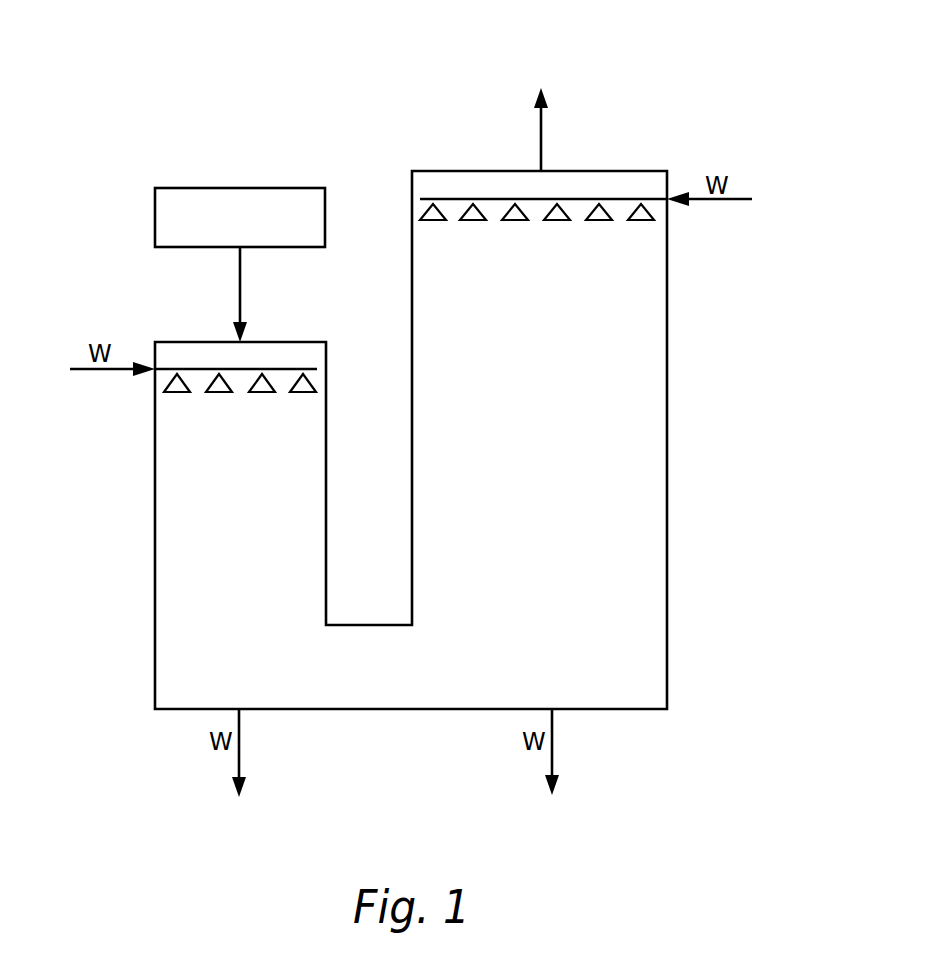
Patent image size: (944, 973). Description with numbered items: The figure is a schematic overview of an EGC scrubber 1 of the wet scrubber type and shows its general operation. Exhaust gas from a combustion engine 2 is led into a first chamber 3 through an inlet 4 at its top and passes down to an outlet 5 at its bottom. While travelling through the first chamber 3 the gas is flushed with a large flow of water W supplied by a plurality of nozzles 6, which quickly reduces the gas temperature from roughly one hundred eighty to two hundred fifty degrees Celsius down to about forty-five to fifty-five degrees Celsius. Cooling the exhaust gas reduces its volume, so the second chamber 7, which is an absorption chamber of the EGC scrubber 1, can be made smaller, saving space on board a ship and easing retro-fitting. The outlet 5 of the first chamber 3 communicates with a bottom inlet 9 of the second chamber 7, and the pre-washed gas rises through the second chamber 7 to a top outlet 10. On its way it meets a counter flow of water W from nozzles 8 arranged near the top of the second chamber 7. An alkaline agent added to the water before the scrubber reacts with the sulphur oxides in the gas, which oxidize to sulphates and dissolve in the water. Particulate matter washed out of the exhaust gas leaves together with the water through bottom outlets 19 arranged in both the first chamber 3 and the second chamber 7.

The EGC scrubber 1 is at (678, 105).
The combustion engine 2 is at (155, 207).
The first chamber 3 is at (220, 483).
The inlet 4 is at (236, 340).
The outlet 5 is at (323, 667).
The nozzles 6 is at (260, 383).
The second chamber 7 is at (560, 403).
The nozzles 8 is at (472, 213).
The inlet 9 is at (417, 667).
The outlet 10 is at (535, 170).
The bottom outlets 19 is at (243, 712).